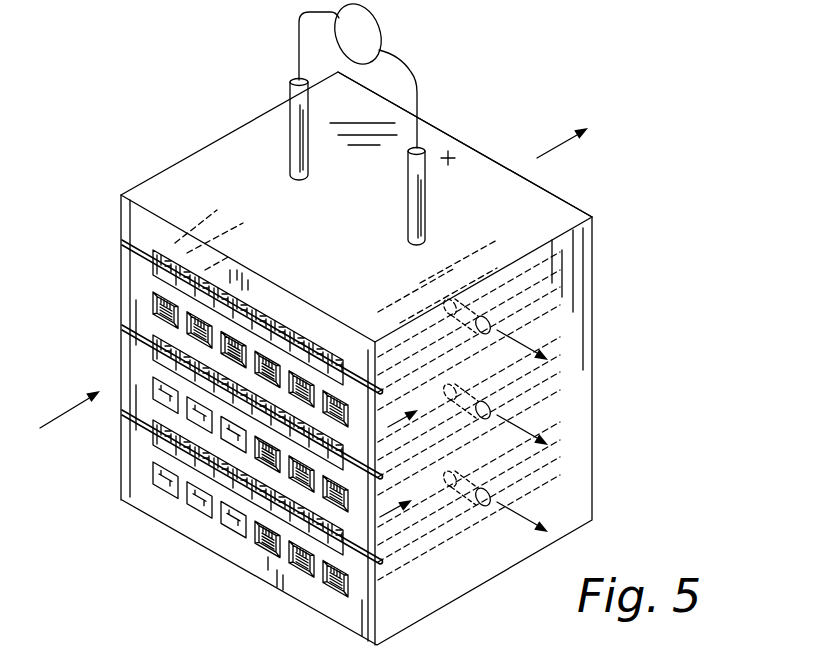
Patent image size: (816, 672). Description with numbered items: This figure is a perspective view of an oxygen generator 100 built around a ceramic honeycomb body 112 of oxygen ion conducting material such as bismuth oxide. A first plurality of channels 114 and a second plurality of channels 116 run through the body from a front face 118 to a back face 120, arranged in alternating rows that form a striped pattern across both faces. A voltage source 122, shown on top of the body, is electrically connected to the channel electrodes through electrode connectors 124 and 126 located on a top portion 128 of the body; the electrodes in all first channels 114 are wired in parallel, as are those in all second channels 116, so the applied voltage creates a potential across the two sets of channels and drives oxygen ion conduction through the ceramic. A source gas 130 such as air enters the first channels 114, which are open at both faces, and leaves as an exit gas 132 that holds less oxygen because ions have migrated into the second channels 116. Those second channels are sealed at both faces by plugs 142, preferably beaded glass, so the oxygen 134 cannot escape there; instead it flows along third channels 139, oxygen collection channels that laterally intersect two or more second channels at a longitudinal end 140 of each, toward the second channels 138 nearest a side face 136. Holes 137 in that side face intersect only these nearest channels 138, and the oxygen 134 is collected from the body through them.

The oxygen generator 100 is at (178, 81).
The ceramic honeycomb body 112 is at (247, 567).
The first plurality of channels 114 is at (153, 303).
The second plurality of channels 116 is at (178, 244).
The front face 118 is at (326, 600).
The back face 120 is at (580, 196).
The voltage source 122 is at (378, 24).
The electrode connector 124 is at (425, 174).
The electrode connector 126 is at (293, 115).
The top portion 128 is at (258, 126).
The source gas 130 is at (54, 416).
The exit gas 132 is at (583, 133).
The oxygen 134 is at (512, 517).
The side face 136 is at (444, 583).
The holes 137 is at (492, 324).
The second channels nearest the side face 138 is at (515, 272).
The third channels 139 is at (130, 256).
The longitudinal end 140 is at (277, 306).
The plugs 142 is at (212, 277).